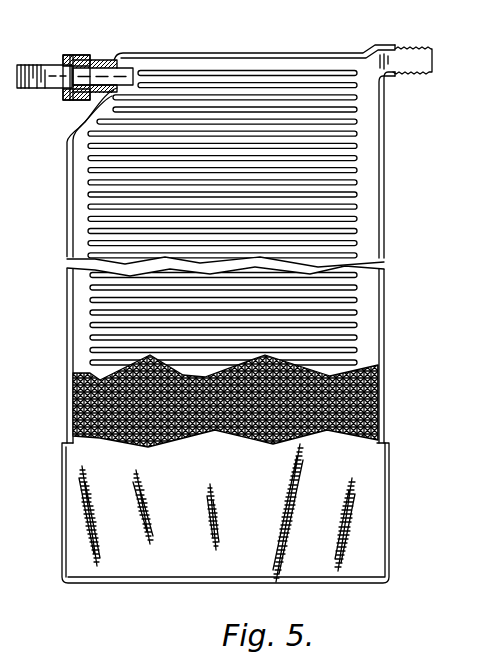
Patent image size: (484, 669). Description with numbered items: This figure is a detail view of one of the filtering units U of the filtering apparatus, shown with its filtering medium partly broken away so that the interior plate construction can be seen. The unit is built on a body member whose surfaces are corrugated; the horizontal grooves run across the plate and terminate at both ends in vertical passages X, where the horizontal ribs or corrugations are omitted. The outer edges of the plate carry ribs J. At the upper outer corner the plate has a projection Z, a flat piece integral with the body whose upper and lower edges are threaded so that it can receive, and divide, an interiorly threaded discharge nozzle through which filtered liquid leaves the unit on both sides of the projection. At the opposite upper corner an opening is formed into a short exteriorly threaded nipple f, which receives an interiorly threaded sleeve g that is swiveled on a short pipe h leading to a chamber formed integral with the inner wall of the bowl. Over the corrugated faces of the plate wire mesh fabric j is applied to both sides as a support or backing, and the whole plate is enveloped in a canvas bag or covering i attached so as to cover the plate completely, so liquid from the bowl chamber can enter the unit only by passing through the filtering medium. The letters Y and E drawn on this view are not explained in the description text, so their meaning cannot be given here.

The vertical passages X is at (367, 228).
The filtering unit U is at (254, 319).
The ribs J is at (225, 228).
The upper right casing wall Y is at (385, 140).
The projection Z is at (418, 53).
The interiorly threaded sleeve g is at (66, 55).
The exteriorly threaded nipple f is at (99, 59).
The inlet bore E is at (122, 72).
The short pipe h is at (53, 87).
The wire mesh fabric j is at (378, 397).
The canvas bag i is at (373, 487).